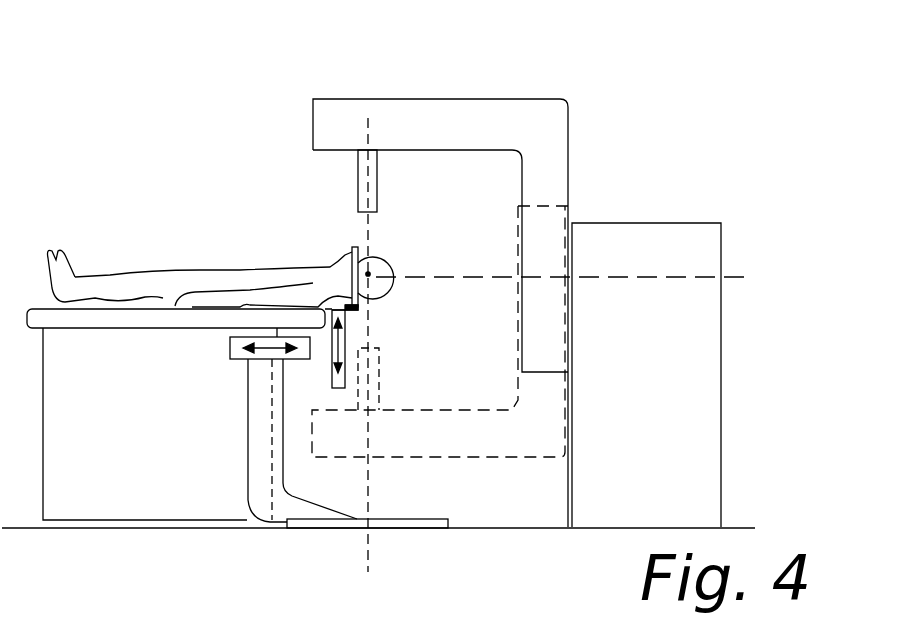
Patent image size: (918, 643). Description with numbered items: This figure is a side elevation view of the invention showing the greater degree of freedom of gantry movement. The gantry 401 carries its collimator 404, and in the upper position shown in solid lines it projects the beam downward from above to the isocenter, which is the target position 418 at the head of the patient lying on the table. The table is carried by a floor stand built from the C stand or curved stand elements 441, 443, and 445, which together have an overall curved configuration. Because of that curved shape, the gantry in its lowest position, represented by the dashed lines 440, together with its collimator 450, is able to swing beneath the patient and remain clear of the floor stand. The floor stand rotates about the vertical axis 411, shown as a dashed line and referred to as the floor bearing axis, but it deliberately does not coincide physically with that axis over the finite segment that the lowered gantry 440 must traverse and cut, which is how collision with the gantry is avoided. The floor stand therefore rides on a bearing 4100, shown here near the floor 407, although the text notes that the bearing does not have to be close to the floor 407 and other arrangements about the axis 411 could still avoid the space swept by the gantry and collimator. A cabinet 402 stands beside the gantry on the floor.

The gantry 401 is at (437, 100).
The collimator 404 is at (357, 188).
The target position 418 is at (368, 274).
The gantry housing / cabinet 402 is at (736, 278).
The curved stand element 445 is at (348, 338).
The collimator 450 is at (380, 388).
The gantry in lowest position 440 is at (495, 462).
The vertical axis 411 is at (370, 548).
The curved stand element 443 is at (238, 362).
The curved stand element 441 is at (250, 482).
The bearing 4100 is at (387, 518).
The floor 407 is at (735, 517).